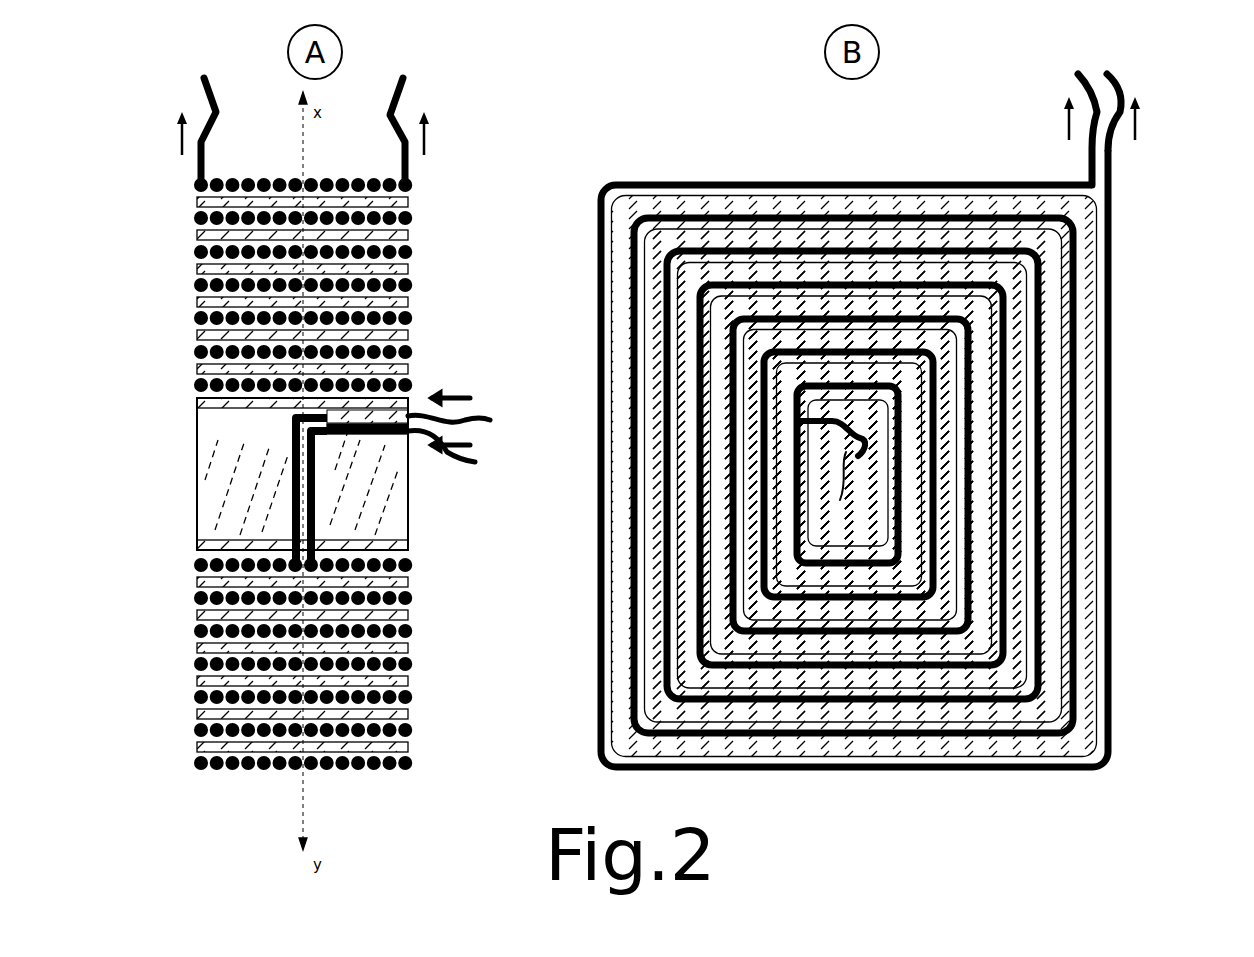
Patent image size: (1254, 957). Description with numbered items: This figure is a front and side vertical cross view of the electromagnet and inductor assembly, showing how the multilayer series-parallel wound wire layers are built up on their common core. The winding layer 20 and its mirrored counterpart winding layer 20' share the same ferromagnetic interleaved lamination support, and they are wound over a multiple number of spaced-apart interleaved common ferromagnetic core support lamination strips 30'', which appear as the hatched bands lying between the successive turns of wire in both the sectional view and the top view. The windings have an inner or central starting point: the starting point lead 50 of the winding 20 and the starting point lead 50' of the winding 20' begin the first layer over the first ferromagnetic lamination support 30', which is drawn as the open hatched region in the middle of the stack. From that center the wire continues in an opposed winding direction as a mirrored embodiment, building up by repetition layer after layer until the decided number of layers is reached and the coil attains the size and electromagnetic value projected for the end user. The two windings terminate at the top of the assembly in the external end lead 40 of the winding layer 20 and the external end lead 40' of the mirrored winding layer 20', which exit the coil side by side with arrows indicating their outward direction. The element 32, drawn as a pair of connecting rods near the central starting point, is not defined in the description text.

The winding layer 20 is at (302, 535).
The mirrored winding layer 20' is at (707, 518).
The first ferromagnetic lamination support 30' is at (478, 340).
The interleaved common ferromagnetic core support lamination strips 30'' is at (698, 476).
The connection rods 32 is at (300, 421).
The external end lead of winding layer 40 is at (649, 114).
The external end lead of the mirrored winding layer 40' is at (762, 114).
The starting point lead of the winding 50 is at (643, 448).
The starting point lead of the mirrored winding 50' is at (632, 479).